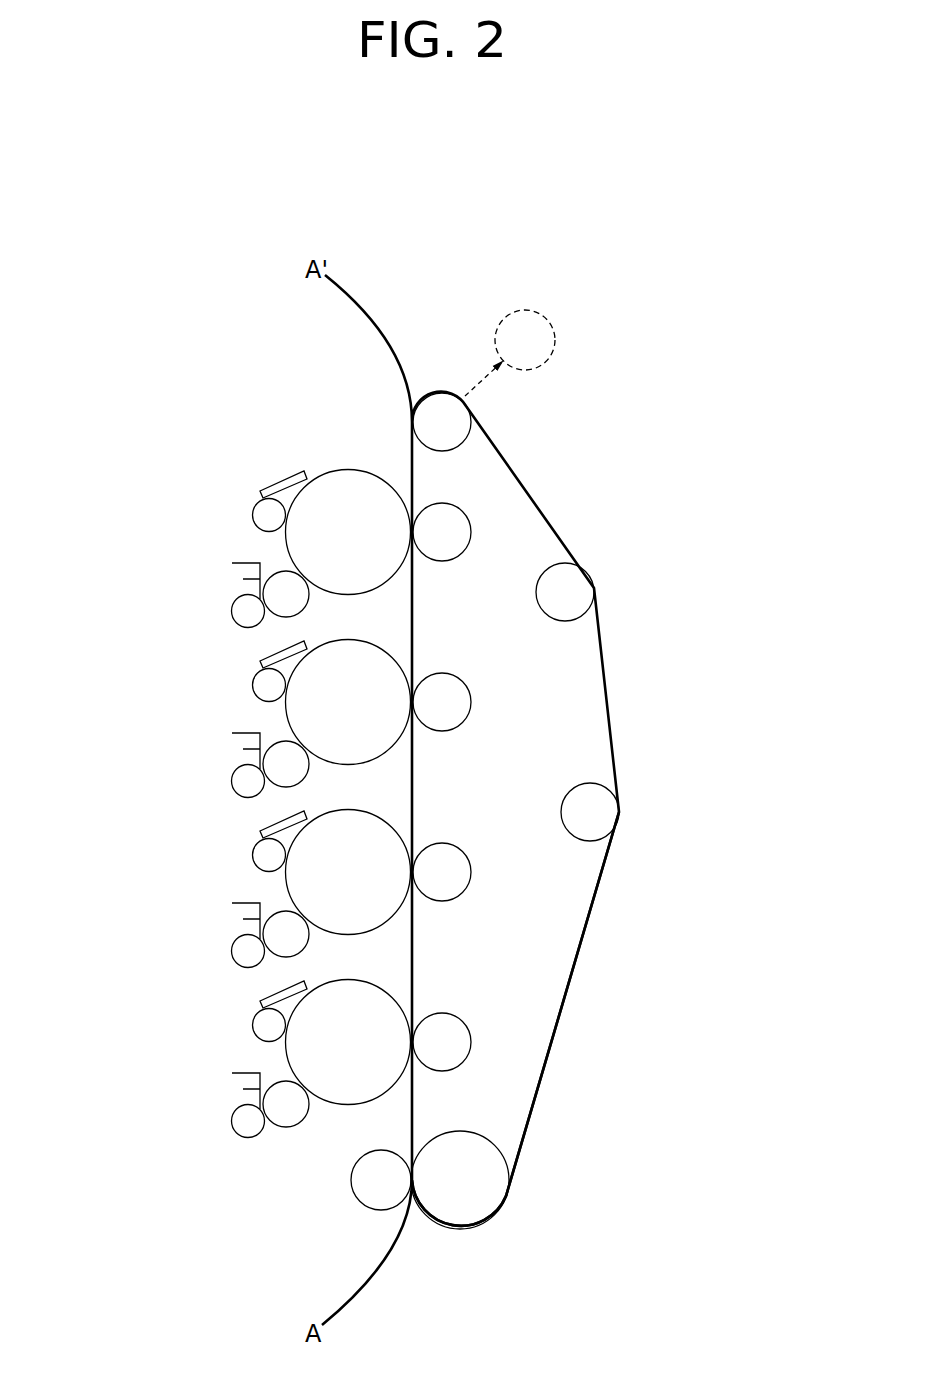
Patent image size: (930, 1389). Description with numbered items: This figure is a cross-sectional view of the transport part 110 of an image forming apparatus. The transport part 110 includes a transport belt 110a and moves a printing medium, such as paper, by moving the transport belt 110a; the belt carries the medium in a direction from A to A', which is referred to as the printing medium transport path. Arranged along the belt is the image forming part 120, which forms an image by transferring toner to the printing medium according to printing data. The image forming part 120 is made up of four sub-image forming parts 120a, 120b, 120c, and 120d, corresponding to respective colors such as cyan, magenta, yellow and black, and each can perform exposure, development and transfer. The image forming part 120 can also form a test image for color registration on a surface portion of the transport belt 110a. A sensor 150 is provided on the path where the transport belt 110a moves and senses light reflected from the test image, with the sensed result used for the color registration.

The transport part 110 is at (517, 800).
The transport belt 110a is at (533, 493).
The image forming part 120 is at (102, 518).
The sub-image forming part 120a is at (232, 540).
The sub-image forming part 120b is at (232, 710).
The sub-image forming part 120c is at (232, 882).
The sub-image forming part 120d is at (232, 1052).
The sensor 150 is at (533, 312).